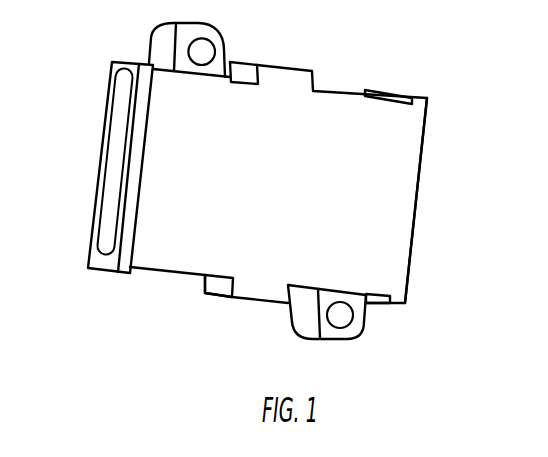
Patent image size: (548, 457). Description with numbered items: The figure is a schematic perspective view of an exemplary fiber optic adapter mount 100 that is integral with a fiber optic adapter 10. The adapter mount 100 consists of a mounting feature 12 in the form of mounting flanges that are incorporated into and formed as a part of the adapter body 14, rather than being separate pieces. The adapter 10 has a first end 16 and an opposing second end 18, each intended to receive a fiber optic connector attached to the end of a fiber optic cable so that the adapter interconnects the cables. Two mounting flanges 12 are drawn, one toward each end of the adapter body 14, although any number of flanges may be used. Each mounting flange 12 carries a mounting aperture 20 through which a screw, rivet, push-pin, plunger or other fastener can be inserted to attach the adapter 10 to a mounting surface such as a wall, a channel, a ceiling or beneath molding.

The adapter mount 100 is at (433, 72).
The adapter 10 is at (422, 153).
The mounting feature 12 is at (220, 28).
The adapter body 14 is at (144, 268).
The first end 16 is at (98, 172).
The second end 18 is at (415, 230).
The mounting apertures 20 is at (189, 50).